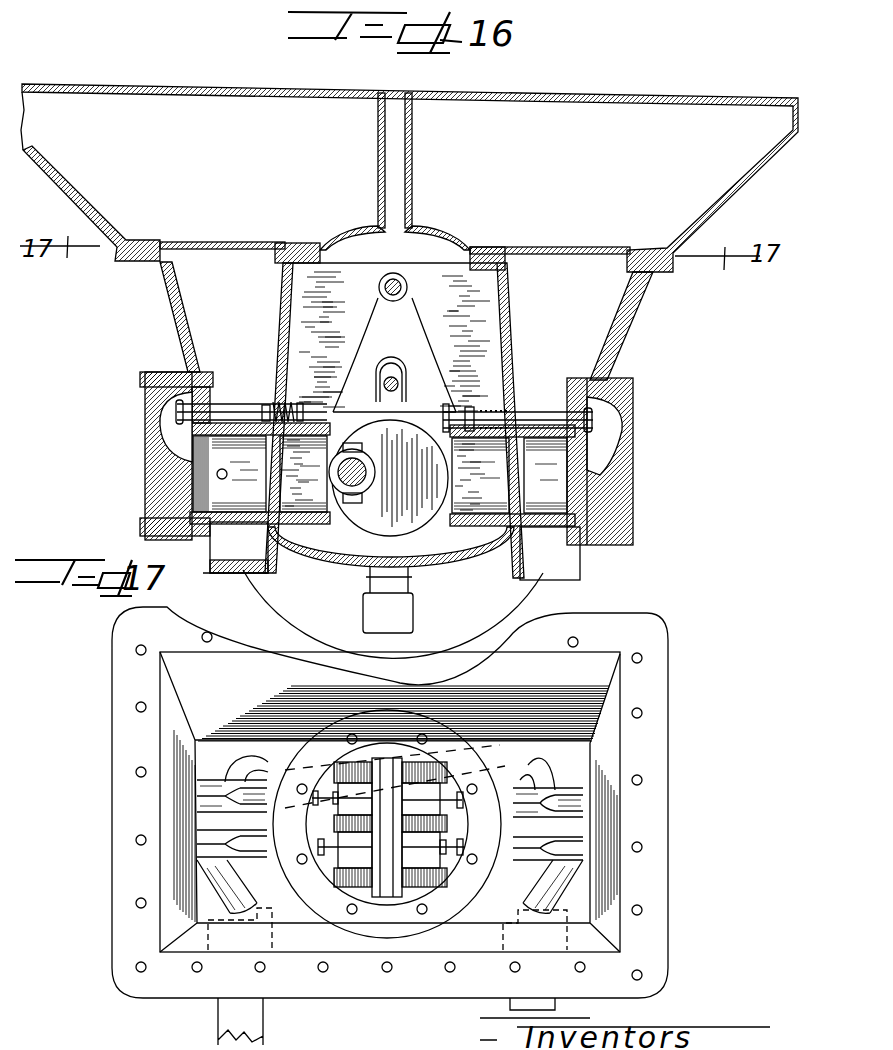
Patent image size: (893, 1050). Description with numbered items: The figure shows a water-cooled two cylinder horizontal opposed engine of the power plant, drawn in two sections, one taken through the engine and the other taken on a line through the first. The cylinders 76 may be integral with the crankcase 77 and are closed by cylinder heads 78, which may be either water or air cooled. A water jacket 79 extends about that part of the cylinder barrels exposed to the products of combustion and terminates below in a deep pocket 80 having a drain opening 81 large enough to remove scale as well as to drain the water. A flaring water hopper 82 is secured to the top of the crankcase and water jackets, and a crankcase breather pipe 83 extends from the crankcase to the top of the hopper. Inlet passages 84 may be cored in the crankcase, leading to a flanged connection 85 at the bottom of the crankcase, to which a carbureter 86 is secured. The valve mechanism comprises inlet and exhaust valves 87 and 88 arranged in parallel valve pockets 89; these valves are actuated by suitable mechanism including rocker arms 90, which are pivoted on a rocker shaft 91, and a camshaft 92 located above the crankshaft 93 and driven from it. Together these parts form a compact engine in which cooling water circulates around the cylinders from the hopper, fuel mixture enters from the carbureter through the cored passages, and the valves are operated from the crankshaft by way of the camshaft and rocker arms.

In FIG. 16, the cylinders 76 is at (297, 507).
In FIG. 16, the crankcase 77 is at (360, 548).
In FIG. 16, the cylinder heads 78 is at (160, 468).
In FIG. 16, the water jacket 79 is at (602, 312).
In FIG. 16, the deep pocket 80 is at (222, 540).
In FIG. 16, the drain opening 81 is at (237, 572).
In FIG. 16, the water hopper 82 is at (746, 185).
In FIG. 17, the water hopper 82 is at (622, 732).
In FIG. 16, the crankcase breather pipe 83 is at (402, 165).
In FIG. 17, the inlet passages 84 is at (215, 763).
In FIG. 16, the flanged connection 85 is at (410, 587).
In FIG. 16, the carbureter 86 is at (413, 616).
In FIG. 17, the inlet valves 87 is at (347, 767).
In FIG. 16, the exhaust valves 88 is at (182, 408).
In FIG. 17, the exhaust valves 88 is at (320, 848).
In FIG. 17, the valve pockets 89 is at (213, 847).
In FIG. 16, the rocker arms 90 is at (397, 343).
In FIG. 17, the rocker arms 90 is at (390, 858).
In FIG. 16, the rocker shaft 91 is at (407, 293).
In FIG. 17, the rocker shaft 91 is at (382, 895).
In FIG. 16, the camshaft 92 is at (403, 367).
In FIG. 16, the crankshaft 93 is at (349, 470).